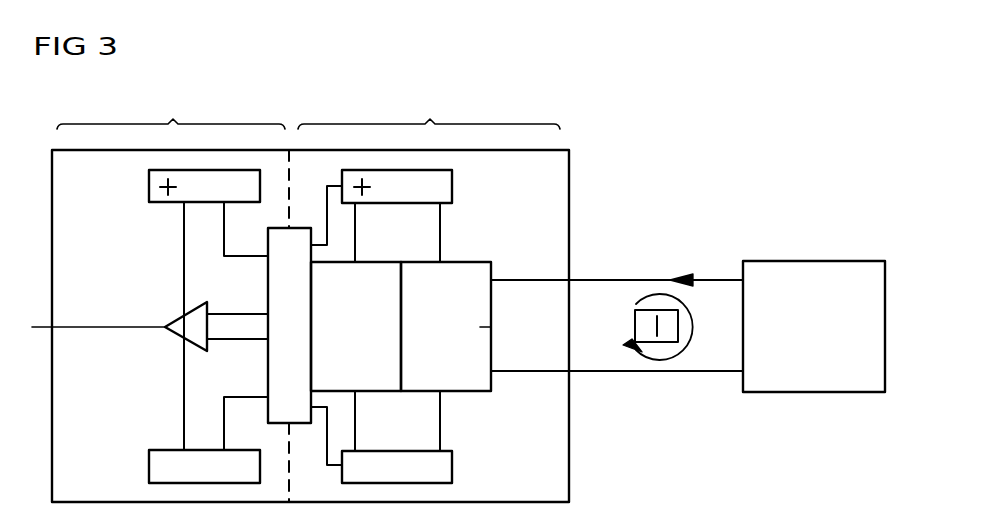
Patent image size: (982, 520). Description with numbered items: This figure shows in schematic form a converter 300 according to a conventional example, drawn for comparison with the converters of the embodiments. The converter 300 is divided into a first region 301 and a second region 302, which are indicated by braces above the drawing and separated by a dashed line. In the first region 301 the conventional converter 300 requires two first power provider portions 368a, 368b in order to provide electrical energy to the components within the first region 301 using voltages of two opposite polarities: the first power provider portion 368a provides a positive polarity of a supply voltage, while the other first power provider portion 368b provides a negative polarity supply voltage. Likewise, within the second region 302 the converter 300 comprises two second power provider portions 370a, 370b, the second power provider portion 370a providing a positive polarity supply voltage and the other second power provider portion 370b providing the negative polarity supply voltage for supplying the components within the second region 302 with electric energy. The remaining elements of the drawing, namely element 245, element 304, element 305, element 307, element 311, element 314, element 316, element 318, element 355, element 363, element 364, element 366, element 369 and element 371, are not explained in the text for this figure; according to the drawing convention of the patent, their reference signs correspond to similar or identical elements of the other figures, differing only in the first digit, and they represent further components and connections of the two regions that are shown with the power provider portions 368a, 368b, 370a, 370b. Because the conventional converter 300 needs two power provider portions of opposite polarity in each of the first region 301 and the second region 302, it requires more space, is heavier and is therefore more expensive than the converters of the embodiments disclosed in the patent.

The converter 300 is at (787, 128).
The first region 301 is at (429, 105).
The second region 302 is at (171, 105).
The load / motor 304 is at (813, 261).
The drive block 305 is at (491, 277).
The return line 307 is at (491, 374).
The rotation / current indicator 311 is at (670, 278).
The shaft 314 is at (480, 327).
The lower connection lines 316 is at (377, 382).
The upper connection line 318 is at (358, 262).
The controller board 245 is at (302, 426).
The converter block 355 is at (312, 266).
The upper control line 363 is at (266, 312).
The lower control line 364 is at (266, 341).
The amplifier 366 is at (172, 315).
The first power provider portion 368a is at (452, 186).
The first power provider portion 368b is at (452, 465).
The supply connection line 369 is at (440, 207).
The second power provider portion 370a is at (149, 190).
The second power provider portion 370b is at (149, 469).
The control supply lines 371 is at (214, 204).